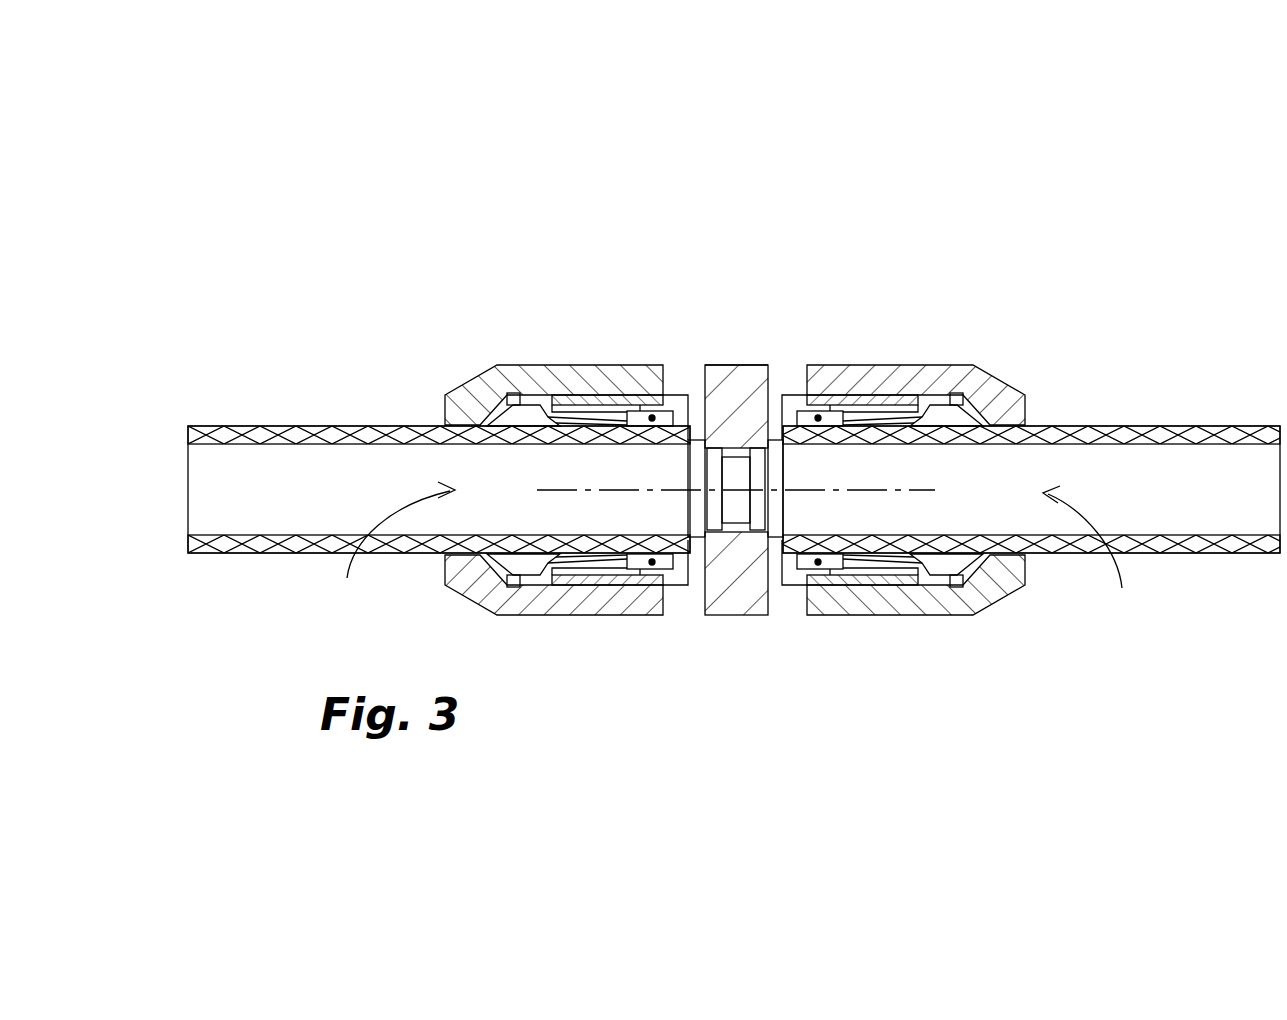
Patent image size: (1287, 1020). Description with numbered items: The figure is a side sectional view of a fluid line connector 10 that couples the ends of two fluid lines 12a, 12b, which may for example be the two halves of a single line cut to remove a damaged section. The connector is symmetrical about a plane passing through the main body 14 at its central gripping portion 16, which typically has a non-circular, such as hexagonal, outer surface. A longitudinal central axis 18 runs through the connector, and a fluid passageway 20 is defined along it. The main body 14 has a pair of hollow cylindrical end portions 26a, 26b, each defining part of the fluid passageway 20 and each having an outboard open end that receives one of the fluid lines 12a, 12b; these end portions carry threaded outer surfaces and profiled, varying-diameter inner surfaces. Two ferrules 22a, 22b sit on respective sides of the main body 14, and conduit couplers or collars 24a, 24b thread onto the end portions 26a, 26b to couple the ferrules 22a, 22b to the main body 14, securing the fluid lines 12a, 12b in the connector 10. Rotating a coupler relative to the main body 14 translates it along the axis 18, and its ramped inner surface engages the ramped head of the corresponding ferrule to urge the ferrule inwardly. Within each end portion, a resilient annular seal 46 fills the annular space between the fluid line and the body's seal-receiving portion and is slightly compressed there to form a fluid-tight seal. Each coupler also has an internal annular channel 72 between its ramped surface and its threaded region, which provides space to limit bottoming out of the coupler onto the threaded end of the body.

The fluid line connector 10 is at (1130, 150).
The fluid line 12a is at (250, 426).
The fluid line 12b is at (1178, 426).
The main body 14 is at (772, 378).
The central gripping portion 16 is at (765, 349).
The longitudinal central axis 18 is at (897, 490).
The fluid passageway 20 is at (732, 556).
The ferrule 22a is at (527, 384).
The ferrule 22b is at (972, 398).
The conduit coupler 24a is at (612, 348).
The conduit coupler 24b is at (953, 358).
The hollow cylindrical end portion 26a is at (567, 393).
The hollow cylindrical end portion 26b is at (870, 393).
The resilient annular seal 46 is at (653, 415).
The annular channel 72 is at (512, 393).